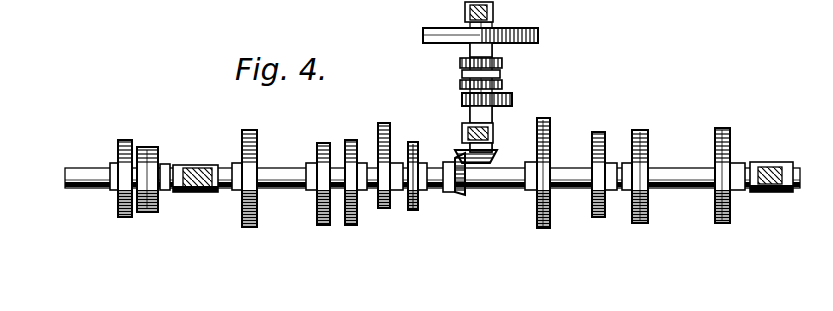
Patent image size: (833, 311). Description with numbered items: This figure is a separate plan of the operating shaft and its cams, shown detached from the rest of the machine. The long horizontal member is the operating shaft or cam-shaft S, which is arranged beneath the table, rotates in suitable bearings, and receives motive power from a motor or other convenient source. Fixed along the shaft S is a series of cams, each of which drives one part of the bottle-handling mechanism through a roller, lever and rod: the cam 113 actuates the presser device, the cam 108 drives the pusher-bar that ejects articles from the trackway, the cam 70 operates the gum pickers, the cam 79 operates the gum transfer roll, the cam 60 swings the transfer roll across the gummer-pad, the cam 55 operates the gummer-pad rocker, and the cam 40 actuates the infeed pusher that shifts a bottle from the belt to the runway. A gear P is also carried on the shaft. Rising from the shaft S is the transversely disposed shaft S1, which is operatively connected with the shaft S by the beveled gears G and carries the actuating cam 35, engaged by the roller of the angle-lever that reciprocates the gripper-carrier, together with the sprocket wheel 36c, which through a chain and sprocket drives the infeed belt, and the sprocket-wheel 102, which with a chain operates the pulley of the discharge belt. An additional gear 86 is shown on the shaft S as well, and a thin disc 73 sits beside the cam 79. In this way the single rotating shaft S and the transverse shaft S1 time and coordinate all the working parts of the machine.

The actuating cam 35 is at (538, 35).
The sprocket wheel 36c is at (503, 66).
The sprocket-wheel 102 is at (460, 85).
The transversely disposed shaft S1 is at (470, 120).
The gear P is at (147, 147).
The cam 113 is at (246, 170).
The cam 108 is at (323, 143).
The cam 70 is at (351, 141).
The cam 79 is at (384, 124).
The gear 73+ 73 is at (431, 179).
The beveled gears G is at (453, 167).
The gear 86 is at (547, 130).
The cam 60 is at (600, 133).
The cam 55 is at (640, 131).
The cam 40 is at (724, 129).
The operating shaft S is at (673, 176).